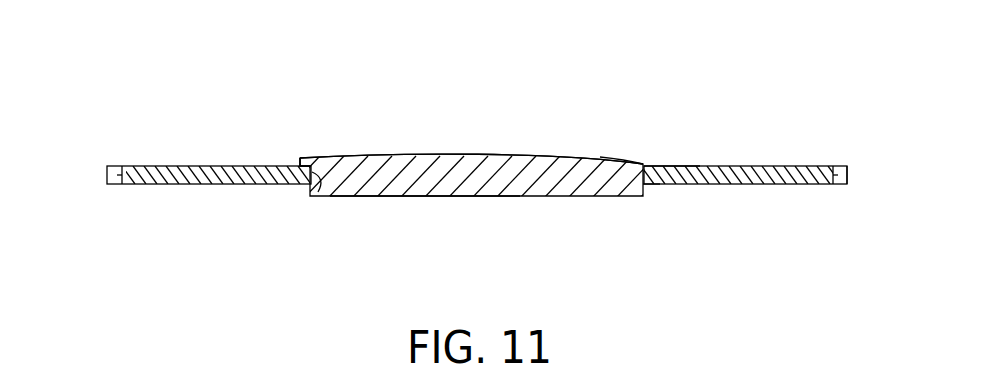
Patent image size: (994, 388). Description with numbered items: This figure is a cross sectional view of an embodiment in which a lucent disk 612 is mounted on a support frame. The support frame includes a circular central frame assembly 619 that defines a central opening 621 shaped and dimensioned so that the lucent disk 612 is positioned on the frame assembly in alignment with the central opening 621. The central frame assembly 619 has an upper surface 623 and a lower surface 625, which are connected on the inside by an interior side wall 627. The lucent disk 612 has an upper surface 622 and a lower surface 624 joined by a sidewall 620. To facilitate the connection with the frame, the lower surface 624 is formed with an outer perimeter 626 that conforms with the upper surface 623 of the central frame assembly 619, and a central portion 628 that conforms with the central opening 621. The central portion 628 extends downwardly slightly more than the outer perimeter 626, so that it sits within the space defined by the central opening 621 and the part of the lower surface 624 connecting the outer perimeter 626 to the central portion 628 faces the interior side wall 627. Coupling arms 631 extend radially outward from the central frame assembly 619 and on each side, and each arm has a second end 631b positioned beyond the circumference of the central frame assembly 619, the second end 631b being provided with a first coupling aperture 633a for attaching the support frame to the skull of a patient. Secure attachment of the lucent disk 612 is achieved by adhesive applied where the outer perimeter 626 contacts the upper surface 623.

The lucent disk 612 is at (350, 157).
The circular central frame assembly 619 is at (673, 165).
The sidewall 620 is at (273, 166).
The central opening 621 is at (498, 171).
The upper surface 622 is at (450, 156).
The upper surface 623 is at (650, 160).
The lower surface 624 is at (390, 197).
The lower surface 625 is at (655, 184).
The outer perimeter 626 is at (300, 157).
The interior side wall 627 is at (312, 195).
The central portion 628 is at (470, 197).
The coupling arms 631 is at (173, 166).
The second end 631b is at (847, 177).
The first coupling aperture 633a is at (113, 166).